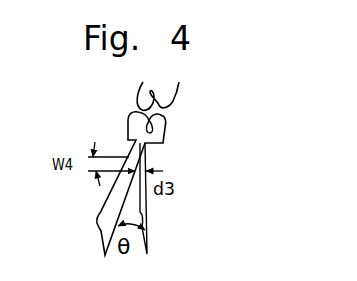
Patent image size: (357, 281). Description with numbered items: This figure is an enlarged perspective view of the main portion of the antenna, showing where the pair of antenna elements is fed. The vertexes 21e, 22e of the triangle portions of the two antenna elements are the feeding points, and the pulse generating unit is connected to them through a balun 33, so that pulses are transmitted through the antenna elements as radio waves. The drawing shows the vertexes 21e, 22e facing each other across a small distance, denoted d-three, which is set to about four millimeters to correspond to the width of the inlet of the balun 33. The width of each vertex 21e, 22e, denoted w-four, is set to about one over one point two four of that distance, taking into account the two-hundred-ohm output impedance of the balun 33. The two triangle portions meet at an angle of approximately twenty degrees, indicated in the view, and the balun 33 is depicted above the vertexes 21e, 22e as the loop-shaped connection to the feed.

The balun 33 is at (180, 96).
The vertex of triangle portion 21e is at (135, 164).
The vertex of triangle portion 22e is at (147, 160).